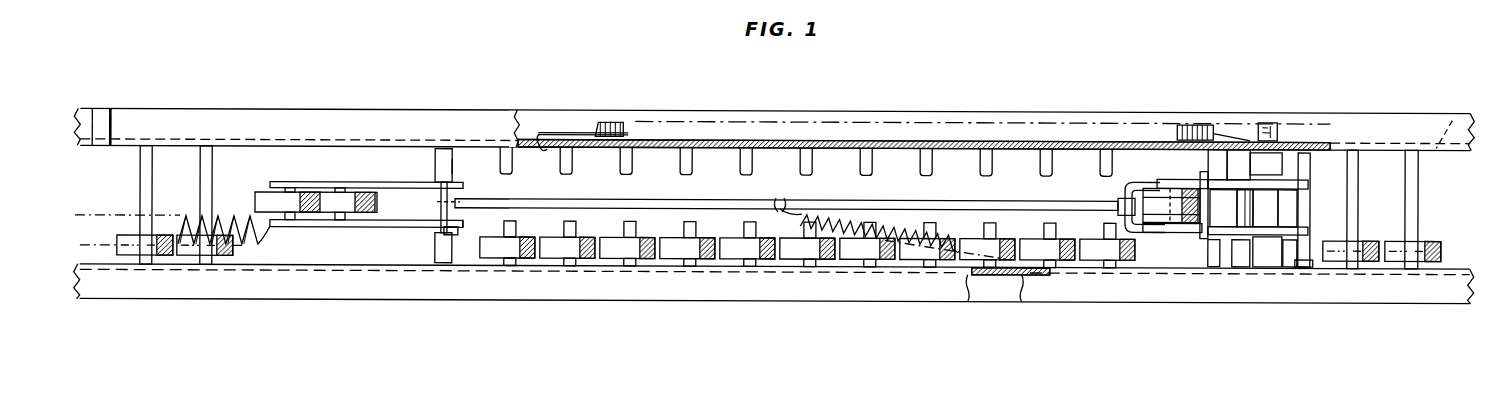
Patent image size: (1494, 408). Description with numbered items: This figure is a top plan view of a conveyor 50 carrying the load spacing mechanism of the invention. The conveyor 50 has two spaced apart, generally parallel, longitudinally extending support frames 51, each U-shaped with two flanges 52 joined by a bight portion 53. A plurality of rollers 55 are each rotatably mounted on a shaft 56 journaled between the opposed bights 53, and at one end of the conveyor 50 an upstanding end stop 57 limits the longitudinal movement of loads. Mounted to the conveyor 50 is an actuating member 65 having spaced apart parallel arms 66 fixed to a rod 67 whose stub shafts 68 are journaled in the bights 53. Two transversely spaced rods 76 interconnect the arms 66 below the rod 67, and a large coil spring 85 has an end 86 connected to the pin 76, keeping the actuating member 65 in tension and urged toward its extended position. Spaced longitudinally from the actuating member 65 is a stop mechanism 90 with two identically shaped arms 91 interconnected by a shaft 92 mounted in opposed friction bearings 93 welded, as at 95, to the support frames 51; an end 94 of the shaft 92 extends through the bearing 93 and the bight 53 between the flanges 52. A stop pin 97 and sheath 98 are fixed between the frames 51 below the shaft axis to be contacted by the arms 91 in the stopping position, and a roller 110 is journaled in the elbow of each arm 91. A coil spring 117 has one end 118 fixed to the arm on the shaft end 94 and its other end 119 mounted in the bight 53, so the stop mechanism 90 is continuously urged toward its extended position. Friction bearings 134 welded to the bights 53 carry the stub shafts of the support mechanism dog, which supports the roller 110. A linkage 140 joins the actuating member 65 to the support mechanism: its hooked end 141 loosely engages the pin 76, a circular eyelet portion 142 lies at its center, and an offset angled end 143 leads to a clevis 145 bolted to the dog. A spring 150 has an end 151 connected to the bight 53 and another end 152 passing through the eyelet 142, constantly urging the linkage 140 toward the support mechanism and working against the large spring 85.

The conveyor 50 is at (954, 85).
The support frame 51 is at (1383, 112).
The flange 52 is at (1422, 112).
The bight portion 53 is at (1455, 116).
The roller 55 is at (120, 240).
The shaft 56 is at (140, 177).
The end stop 57 is at (113, 122).
The actuating member 65 is at (378, 150).
The arm 66 is at (277, 182).
The rod 67 is at (453, 170).
The stub shaft 68 is at (445, 149).
The rod 76 is at (456, 236).
The coil spring 85 is at (262, 240).
The spring end 86 is at (458, 223).
The stop mechanism 90 is at (1239, 248).
The arm 91 is at (1168, 178).
The shaft 92 is at (1272, 204).
The friction bearing 93 is at (1266, 262).
The shaft end 94 is at (1270, 149).
The weld 95 is at (1290, 265).
The stop pin 97 is at (1306, 200).
The sheath 98 is at (1305, 152).
The roller 110 is at (1129, 181).
The coil spring 117 is at (1190, 122).
The spring end 118 is at (1257, 130).
The spring end 119 is at (546, 152).
The friction bearing 134 is at (1213, 262).
The linkage 140 is at (934, 198).
The hooked end 141 is at (438, 201).
The eyelet portion 142 is at (792, 210).
The offset angled end 143 is at (1118, 201).
The clevis 145 is at (1146, 232).
The spring 150 is at (852, 238).
The spring end 151 is at (1002, 276).
The spring end 152 is at (779, 198).